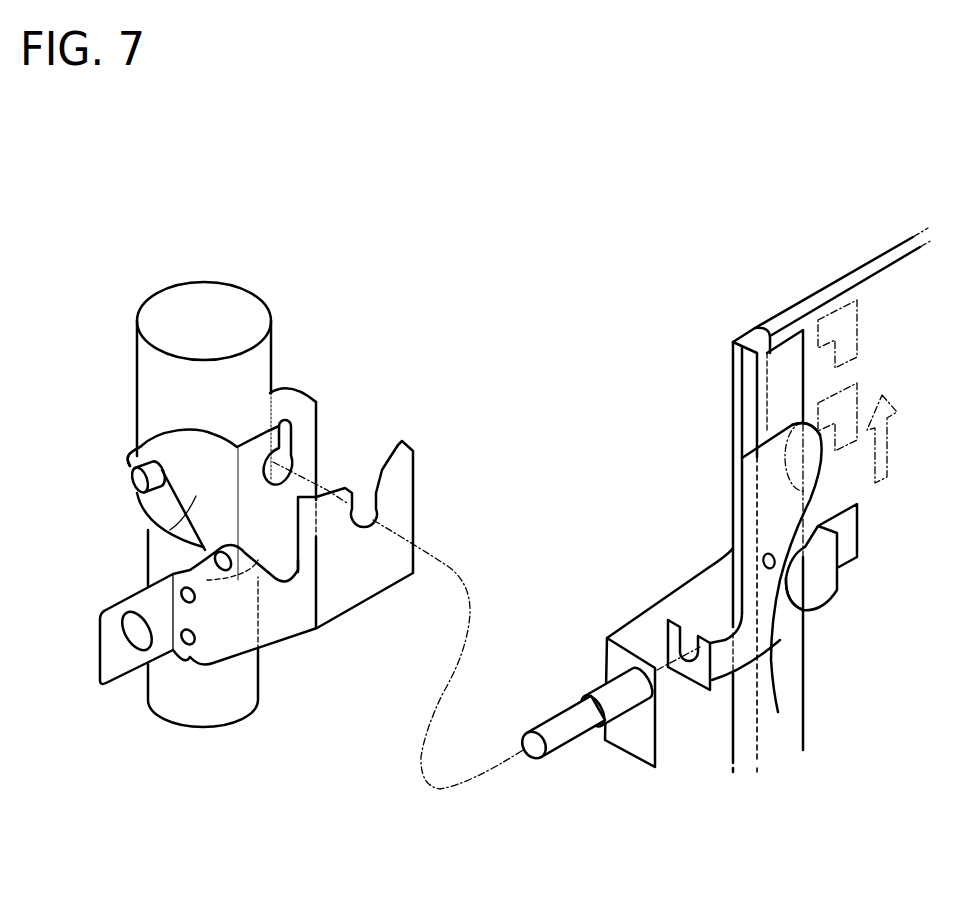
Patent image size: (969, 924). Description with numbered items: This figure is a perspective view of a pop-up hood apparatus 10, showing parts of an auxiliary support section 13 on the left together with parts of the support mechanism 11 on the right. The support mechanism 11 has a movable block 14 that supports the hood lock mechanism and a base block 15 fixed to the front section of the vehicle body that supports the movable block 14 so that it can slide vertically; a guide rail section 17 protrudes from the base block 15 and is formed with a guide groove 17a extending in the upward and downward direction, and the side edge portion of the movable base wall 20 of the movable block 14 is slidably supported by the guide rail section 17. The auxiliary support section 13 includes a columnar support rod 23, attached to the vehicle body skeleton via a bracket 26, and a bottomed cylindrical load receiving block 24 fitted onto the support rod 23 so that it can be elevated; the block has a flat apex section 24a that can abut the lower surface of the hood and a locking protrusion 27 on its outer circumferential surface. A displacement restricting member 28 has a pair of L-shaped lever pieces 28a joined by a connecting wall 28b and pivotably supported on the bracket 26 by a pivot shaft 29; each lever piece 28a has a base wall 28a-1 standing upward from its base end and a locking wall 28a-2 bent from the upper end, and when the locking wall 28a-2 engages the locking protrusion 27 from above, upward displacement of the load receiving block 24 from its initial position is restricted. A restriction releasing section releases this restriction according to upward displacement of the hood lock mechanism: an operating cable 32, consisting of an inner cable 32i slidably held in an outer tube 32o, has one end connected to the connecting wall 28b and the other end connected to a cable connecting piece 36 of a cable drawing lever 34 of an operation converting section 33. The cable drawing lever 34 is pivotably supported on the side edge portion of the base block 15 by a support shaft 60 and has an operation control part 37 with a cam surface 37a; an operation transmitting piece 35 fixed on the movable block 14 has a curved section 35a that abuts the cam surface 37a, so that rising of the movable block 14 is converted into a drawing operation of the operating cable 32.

The wire harness routing structure 10 is at (613, 171).
The support mechanism 11 is at (743, 778).
The auxiliary support section 13 is at (328, 397).
The movable block 14 is at (902, 256).
The base block 15 is at (847, 272).
The guide rail section 17 is at (769, 338).
The guide groove 17a is at (752, 338).
The movable base wall 20 is at (873, 555).
The support rod 23 is at (163, 697).
The load receiving block 24 is at (135, 374).
The apex section 24a is at (173, 316).
The bracket 26 is at (293, 620).
The locking protrusion 27 is at (132, 477).
The displacement restricting member 28 is at (315, 460).
The lever piece 28a is at (192, 430).
The base wall 28a-1 is at (197, 497).
The locking wall 28a-2 is at (130, 455).
The connecting wall 28b is at (277, 543).
The pivot shaft 29 is at (218, 563).
The operating cable 32 is at (515, 703).
The inner cable 32i is at (503, 765).
The outer tube 32o is at (548, 719).
The operation converting section 33 is at (819, 622).
The cable drawing lever 34 is at (745, 562).
The operation transmitting piece 35 is at (827, 433).
The curved section 35a is at (787, 615).
The cable connecting piece 36 is at (720, 677).
The operation control part 37 is at (791, 513).
The cam surface 37a is at (812, 497).
The support shaft 60 is at (769, 569).